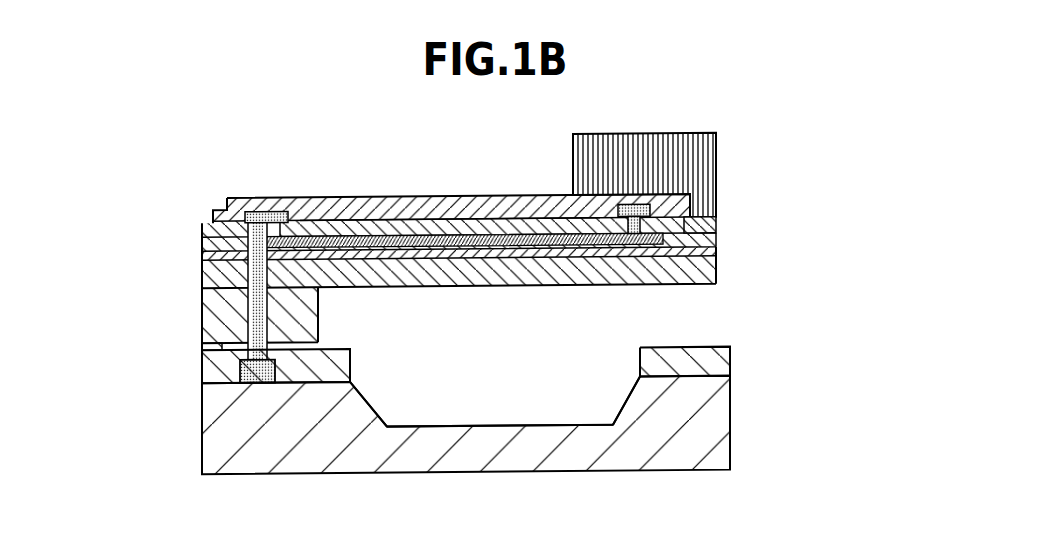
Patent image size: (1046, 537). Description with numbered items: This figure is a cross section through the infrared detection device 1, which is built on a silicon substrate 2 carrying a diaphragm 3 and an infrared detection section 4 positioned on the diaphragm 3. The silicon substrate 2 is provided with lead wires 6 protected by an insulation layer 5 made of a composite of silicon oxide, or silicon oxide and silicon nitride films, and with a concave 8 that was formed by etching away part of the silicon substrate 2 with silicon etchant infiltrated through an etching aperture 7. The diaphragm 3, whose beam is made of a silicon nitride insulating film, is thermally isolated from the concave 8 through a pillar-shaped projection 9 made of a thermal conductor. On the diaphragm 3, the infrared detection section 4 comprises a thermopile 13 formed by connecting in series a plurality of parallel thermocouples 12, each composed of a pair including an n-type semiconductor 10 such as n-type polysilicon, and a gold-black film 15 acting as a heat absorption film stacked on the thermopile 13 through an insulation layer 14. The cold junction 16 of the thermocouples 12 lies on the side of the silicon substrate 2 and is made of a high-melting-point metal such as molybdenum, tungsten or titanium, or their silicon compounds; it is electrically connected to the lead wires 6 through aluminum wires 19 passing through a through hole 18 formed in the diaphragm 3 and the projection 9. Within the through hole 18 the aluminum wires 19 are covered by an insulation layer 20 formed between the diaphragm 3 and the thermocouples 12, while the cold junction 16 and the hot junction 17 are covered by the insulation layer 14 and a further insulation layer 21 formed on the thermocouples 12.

The infrared detection device 1 is at (499, 297).
The silicon substrate 2 is at (741, 414).
The diaphragm 3 is at (724, 269).
The infrared detection section 4 is at (686, 157).
The insulation layer 5 is at (717, 366).
The lead wires 6 is at (240, 370).
The etching aperture 7 is at (647, 321).
The concave 8 is at (548, 403).
The pillar-shaped projection 9 is at (202, 315).
The n-type semiconductor 10 is at (464, 172).
The thermocouples 12 is at (506, 239).
The thermopile 13 is at (329, 228).
The insulation layer 14 is at (392, 208).
The gold-black film 15 is at (672, 137).
The cold junction 16 is at (258, 212).
The hot junction 17 is at (690, 214).
The through hole 18 is at (255, 332).
The aluminum wires 19 is at (267, 322).
The insulation layer 20 is at (203, 252).
The insulation layer 21 is at (436, 224).